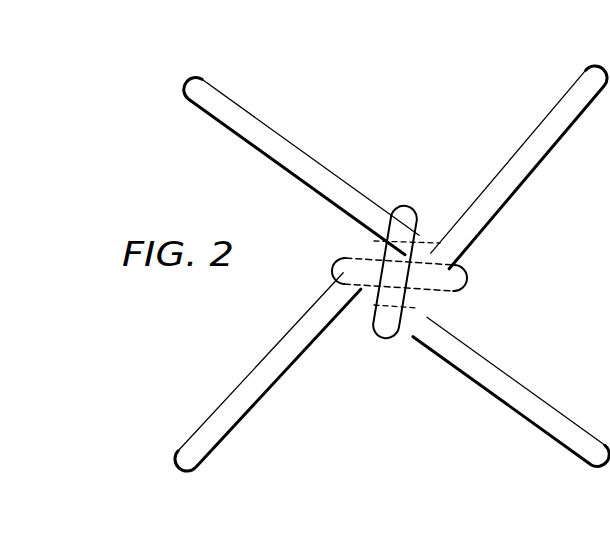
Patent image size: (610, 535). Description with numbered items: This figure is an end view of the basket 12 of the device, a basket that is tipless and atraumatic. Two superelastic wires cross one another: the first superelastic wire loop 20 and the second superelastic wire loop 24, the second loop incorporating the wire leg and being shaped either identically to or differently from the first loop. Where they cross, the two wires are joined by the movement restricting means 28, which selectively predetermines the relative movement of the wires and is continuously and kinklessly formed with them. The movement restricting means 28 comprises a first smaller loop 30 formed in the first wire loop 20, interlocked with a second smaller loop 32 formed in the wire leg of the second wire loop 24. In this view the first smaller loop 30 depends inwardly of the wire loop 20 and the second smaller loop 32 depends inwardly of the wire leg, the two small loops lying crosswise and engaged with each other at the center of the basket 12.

The basket 12 is at (443, 204).
The superelastic wire loop 20 is at (531, 177).
The second superelastic wire loop 24 is at (511, 373).
The movement restricting means 28 is at (358, 345).
The first smaller loop 30 is at (406, 205).
The second smaller loop 32 is at (468, 278).